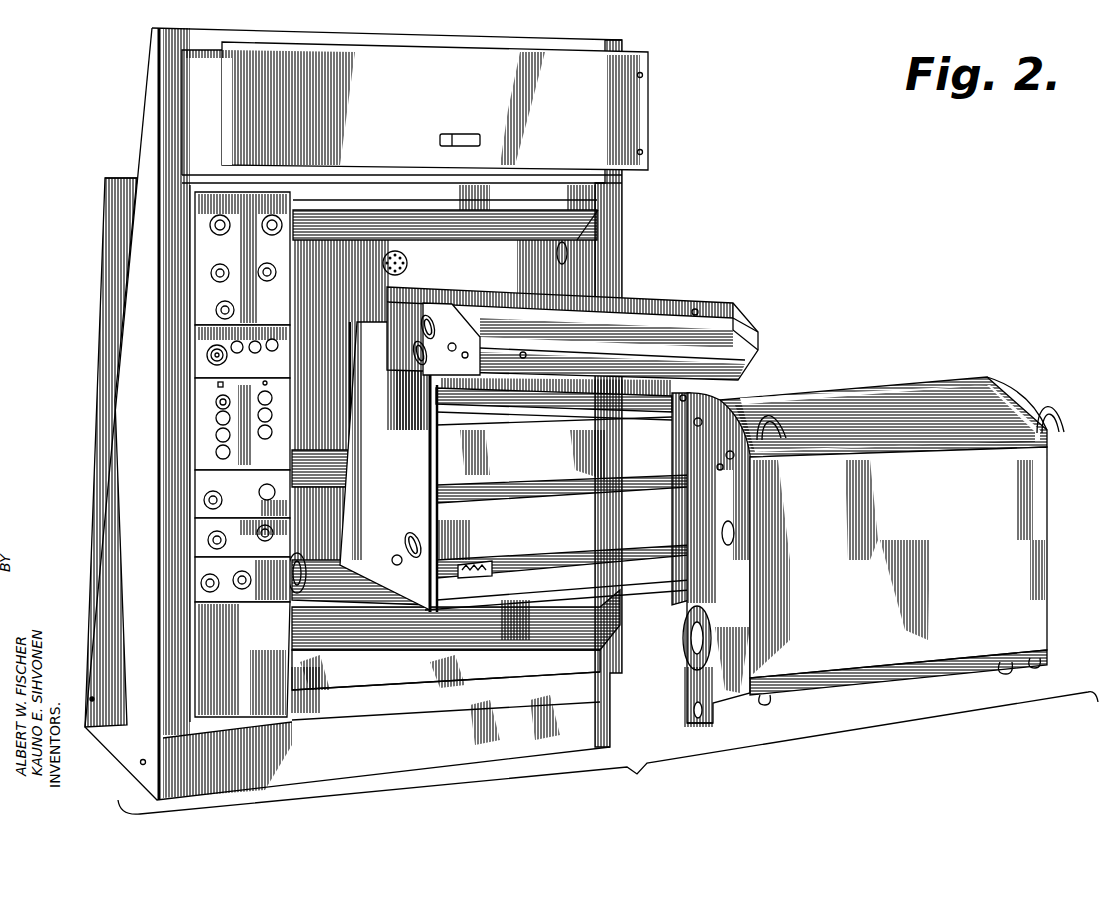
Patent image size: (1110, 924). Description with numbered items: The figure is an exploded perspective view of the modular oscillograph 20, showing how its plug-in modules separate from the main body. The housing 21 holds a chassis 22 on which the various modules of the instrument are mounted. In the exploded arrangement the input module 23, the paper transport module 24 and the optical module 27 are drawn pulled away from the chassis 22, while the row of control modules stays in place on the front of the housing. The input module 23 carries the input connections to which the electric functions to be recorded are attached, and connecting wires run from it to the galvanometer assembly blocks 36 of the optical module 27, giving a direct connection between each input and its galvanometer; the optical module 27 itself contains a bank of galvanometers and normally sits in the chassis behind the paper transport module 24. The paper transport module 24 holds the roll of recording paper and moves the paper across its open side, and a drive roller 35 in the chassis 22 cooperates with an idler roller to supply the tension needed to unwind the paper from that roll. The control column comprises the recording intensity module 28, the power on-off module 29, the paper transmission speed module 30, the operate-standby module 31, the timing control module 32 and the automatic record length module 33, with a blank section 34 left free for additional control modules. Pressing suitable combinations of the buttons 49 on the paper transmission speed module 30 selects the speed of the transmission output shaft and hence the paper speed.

The modular oscillograph 20 is at (724, 161).
The housing 21 is at (99, 377).
The chassis 22 is at (83, 471).
The input module 23 is at (469, 106).
The paper transport module 24 is at (895, 552).
The optical module 27 is at (740, 345).
The recording intensity module 28 is at (173, 258).
The power on-off module 29 is at (173, 351).
The paper transmission speed module 30 is at (173, 424).
The operate-standby module 31 is at (173, 494).
The timing control module 32 is at (173, 537).
The automatic record length module 33 is at (170, 579).
The blank section 34 is at (182, 691).
The drive roller 35 is at (337, 565).
The galvanometer assembly blocks 36 is at (490, 572).
The buttons 49 is at (144, 397).